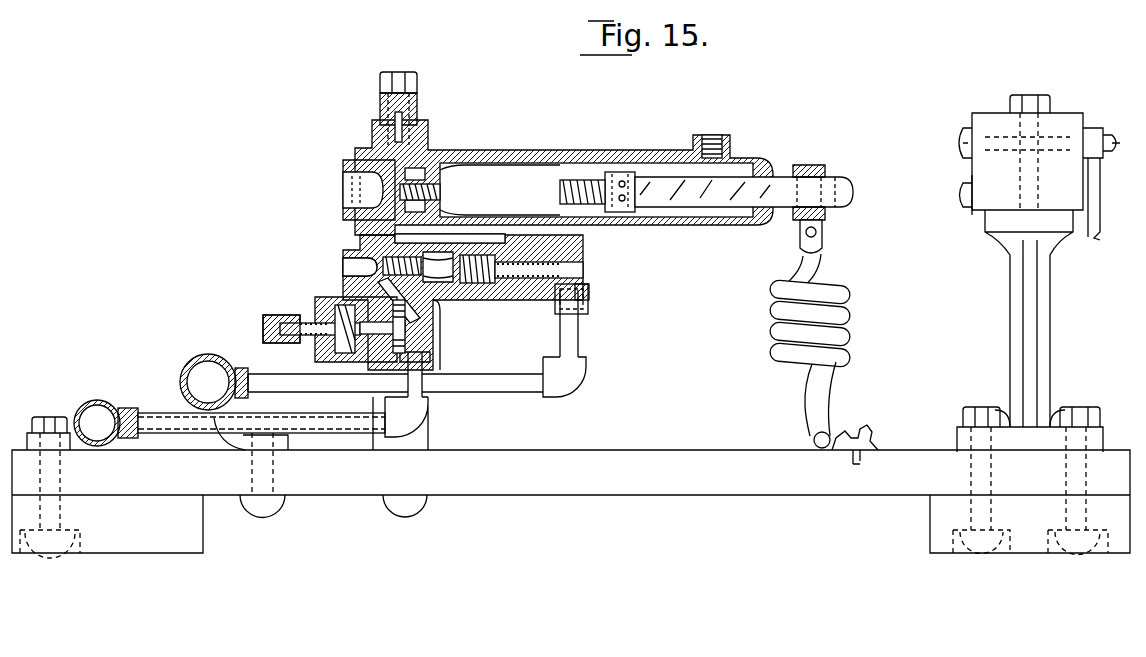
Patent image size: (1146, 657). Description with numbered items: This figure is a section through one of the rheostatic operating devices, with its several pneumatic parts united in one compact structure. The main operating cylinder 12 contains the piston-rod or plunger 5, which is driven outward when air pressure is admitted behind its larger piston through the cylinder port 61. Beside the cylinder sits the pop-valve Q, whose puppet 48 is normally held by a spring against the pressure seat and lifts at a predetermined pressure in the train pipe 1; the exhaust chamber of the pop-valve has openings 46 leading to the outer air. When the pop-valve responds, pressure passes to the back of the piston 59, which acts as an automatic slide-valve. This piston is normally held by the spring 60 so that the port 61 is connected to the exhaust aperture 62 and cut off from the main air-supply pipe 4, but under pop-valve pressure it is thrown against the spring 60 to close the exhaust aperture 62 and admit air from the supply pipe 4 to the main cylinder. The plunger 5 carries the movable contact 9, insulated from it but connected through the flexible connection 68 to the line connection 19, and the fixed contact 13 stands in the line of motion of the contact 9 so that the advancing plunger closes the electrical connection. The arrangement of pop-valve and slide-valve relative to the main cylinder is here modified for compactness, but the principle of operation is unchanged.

The train-pipe 1 is at (106, 423).
The main air-supply pipe 4 is at (214, 382).
The piston-rod or plunger 5 is at (516, 186).
The movable contact 9 is at (855, 191).
The cylinder 12 is at (459, 163).
The fixed contact 13 is at (963, 180).
The line connection 19 is at (873, 433).
The openings 46 is at (306, 344).
The puppet 48 is at (347, 294).
The piston 59 is at (440, 273).
The spring 60 is at (583, 250).
The port 61 is at (456, 240).
The exhaust-aperture 62 is at (547, 283).
The flexible connection 68 is at (851, 343).
The pop-valve Q is at (334, 322).